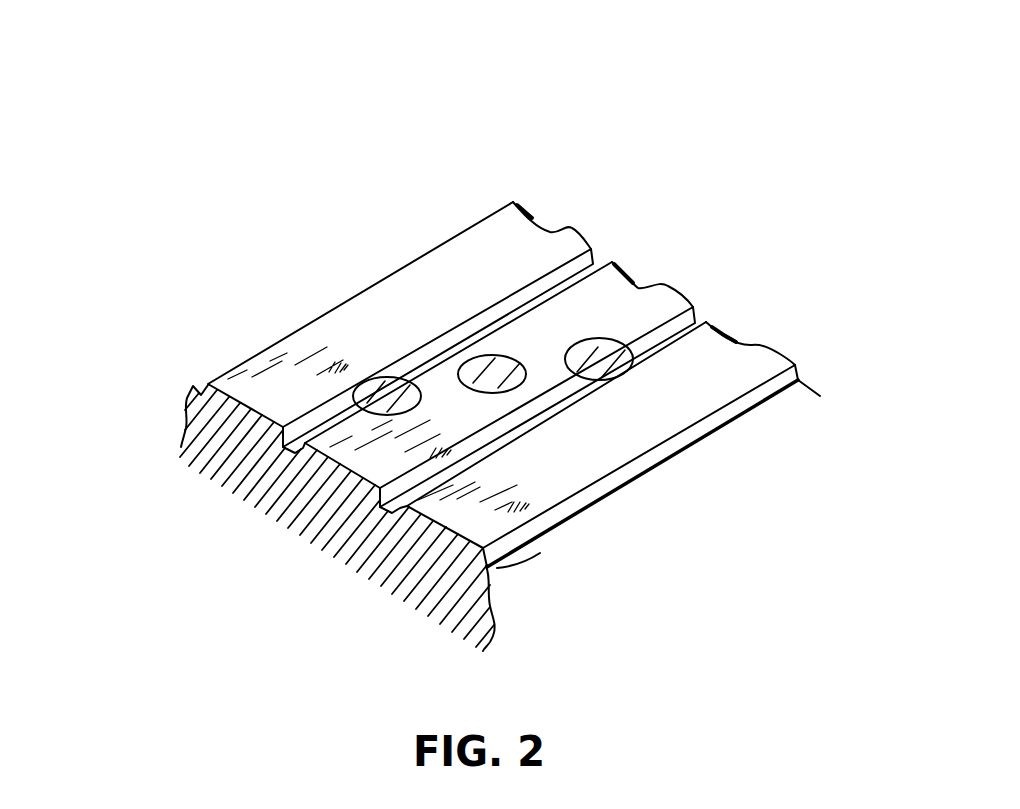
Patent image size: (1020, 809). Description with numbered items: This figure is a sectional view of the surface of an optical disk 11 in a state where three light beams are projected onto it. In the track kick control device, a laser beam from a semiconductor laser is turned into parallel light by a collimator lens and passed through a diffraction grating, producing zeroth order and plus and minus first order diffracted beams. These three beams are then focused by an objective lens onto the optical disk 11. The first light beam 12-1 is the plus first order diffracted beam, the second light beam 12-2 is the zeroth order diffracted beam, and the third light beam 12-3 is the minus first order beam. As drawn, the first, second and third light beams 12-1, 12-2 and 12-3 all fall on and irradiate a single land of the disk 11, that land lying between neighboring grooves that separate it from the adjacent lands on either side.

The optical disk 11 is at (272, 277).
The first light beam 12-1 is at (620, 370).
The second light beam 12-2 is at (497, 395).
The third light beam 12-3 is at (368, 384).